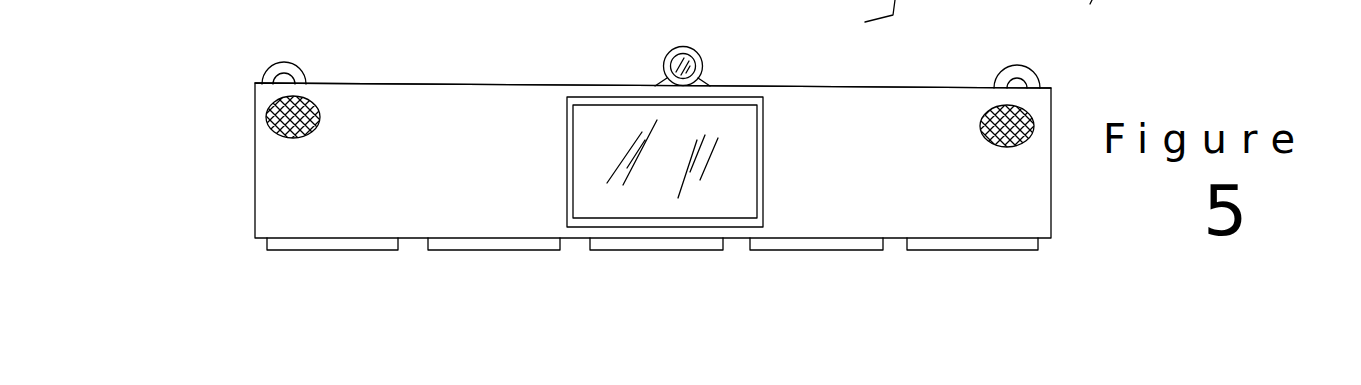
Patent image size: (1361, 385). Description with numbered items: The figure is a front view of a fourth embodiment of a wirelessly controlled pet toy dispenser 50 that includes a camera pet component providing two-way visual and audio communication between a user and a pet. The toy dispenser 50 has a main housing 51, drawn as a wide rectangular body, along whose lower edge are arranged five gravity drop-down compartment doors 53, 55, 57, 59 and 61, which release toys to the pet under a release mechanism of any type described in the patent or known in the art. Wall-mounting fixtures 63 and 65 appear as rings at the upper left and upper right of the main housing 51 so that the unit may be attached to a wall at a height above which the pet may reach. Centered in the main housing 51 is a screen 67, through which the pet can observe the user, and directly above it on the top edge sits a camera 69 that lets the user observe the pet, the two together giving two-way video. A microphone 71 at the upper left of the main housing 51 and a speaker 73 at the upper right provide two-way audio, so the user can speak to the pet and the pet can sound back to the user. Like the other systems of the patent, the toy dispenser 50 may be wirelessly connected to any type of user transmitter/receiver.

The toy dispenser 50 is at (201, 169).
The main housing 51 is at (390, 115).
The gravity drop-down compartment door 53 is at (330, 245).
The gravity drop-down compartment door 55 is at (480, 248).
The gravity drop-down compartment door 57 is at (632, 248).
The gravity drop-down compartment door 59 is at (798, 250).
The gravity drop-down compartment door 61 is at (950, 250).
The wall-mounting fixture 63 is at (280, 63).
The wall-mounting fixture 65 is at (1032, 76).
The screen 67 is at (587, 138).
The camera 69 is at (702, 62).
The microphone 71 is at (278, 110).
The speaker 73 is at (992, 110).